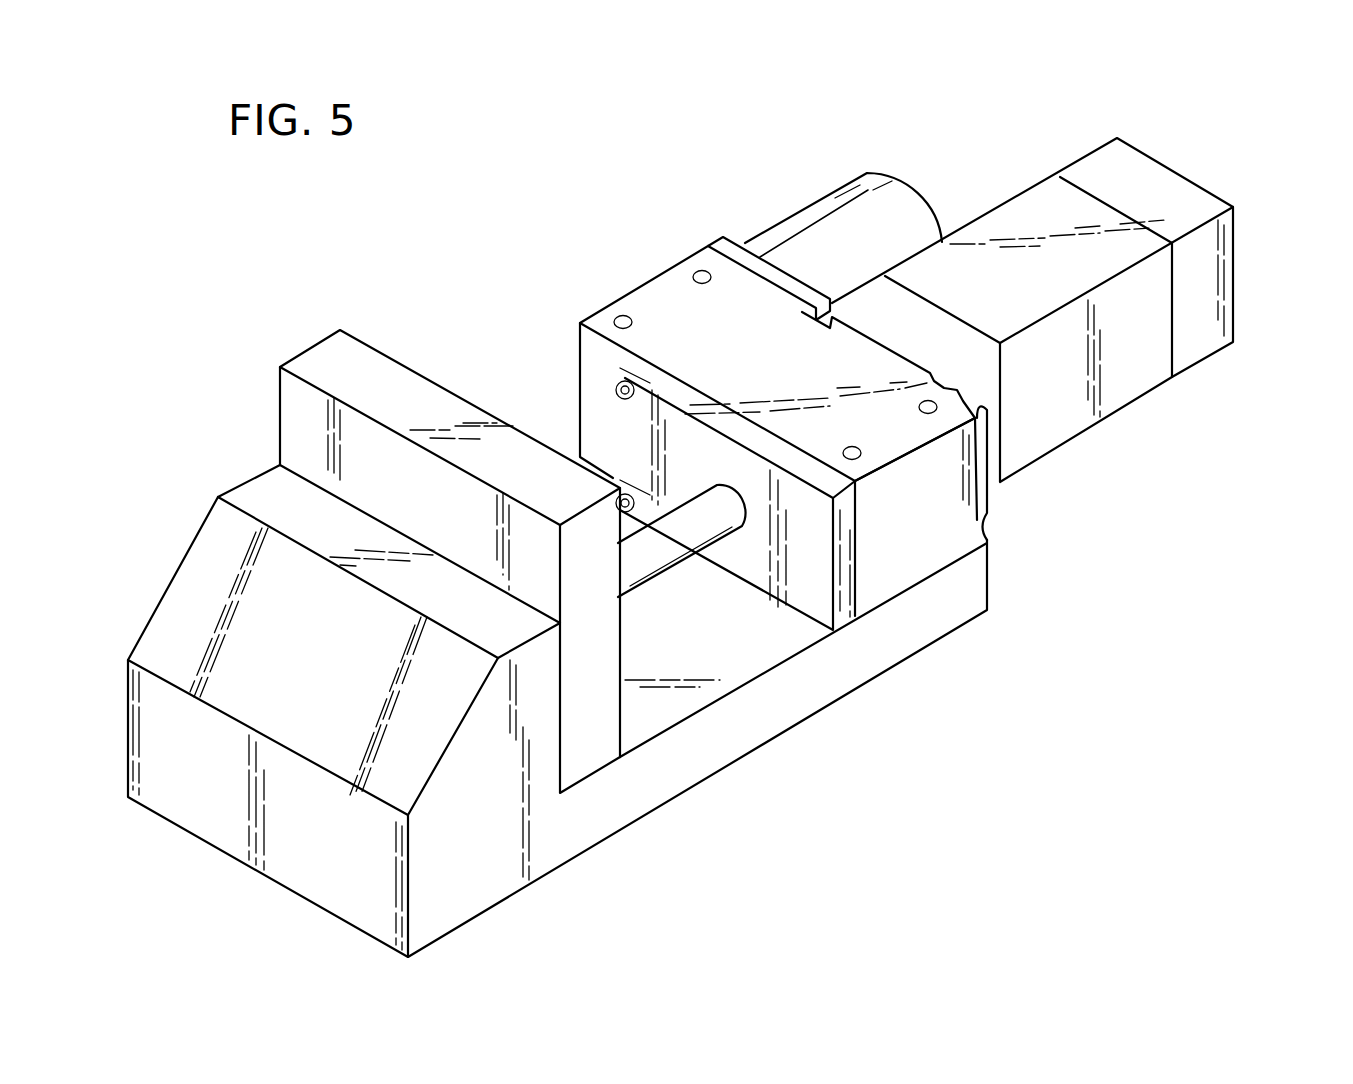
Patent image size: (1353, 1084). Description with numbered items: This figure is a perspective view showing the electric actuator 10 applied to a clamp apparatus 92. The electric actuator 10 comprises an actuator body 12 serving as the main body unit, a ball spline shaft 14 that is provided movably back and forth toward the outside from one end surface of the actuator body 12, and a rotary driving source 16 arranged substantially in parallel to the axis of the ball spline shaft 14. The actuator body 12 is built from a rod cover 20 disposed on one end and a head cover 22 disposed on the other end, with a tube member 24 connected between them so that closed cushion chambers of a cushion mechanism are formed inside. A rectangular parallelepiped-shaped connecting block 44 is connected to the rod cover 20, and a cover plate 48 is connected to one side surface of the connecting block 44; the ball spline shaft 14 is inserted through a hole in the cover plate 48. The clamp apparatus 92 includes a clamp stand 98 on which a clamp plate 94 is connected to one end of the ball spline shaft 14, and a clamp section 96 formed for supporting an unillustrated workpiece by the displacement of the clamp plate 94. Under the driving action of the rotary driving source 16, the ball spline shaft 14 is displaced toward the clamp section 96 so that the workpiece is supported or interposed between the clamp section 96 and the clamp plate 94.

The electric actuator 10 is at (968, 373).
The actuator body 12 is at (1075, 299).
The ball spline shaft 14 is at (662, 560).
The rotary driving source 16 is at (818, 247).
The rod cover 20 is at (933, 327).
The head cover 22 is at (1213, 300).
The tube member 24 is at (1127, 377).
The connecting block 44 is at (673, 327).
The cover plate 48 is at (810, 598).
The clamp apparatus 92 is at (947, 99).
The clamp plate 94 is at (363, 382).
The clamp section 96 is at (308, 517).
The clamp stand 98 is at (702, 777).